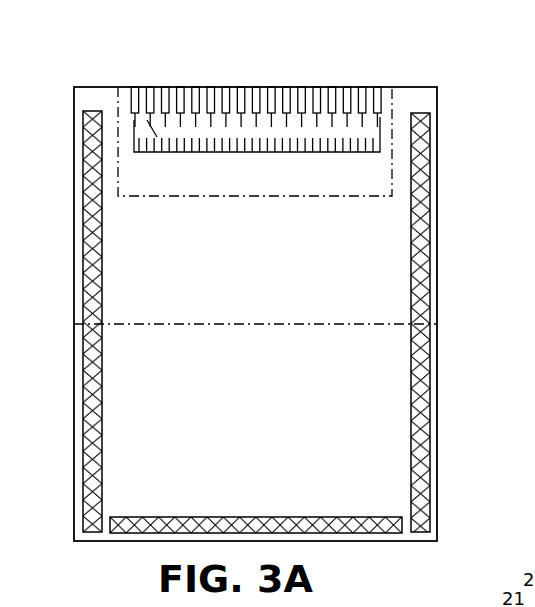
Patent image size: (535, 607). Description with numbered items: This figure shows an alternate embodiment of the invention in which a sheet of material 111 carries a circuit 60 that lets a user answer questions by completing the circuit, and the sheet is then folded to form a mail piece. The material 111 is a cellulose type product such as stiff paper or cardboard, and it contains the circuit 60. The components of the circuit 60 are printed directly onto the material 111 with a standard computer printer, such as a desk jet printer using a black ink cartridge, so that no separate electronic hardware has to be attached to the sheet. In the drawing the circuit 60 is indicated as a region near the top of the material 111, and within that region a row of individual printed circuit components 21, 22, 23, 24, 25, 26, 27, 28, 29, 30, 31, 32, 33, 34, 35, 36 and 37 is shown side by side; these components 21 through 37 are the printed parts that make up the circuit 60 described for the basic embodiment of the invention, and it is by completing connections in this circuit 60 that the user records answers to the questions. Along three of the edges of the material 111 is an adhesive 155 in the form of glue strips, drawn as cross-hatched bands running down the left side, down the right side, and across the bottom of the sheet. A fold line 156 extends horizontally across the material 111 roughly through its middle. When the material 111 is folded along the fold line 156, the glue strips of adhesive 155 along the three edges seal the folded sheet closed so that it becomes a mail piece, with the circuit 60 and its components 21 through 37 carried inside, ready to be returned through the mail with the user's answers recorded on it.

The connector contact pin 21 is at (133, 86).
The connector contact pin 22 is at (150, 86).
The connector contact pin 23 is at (165, 86).
The connector contact pin 24 is at (181, 86).
The connector contact pin 25 is at (196, 86).
The connector contact pin 26 is at (211, 86).
The connector contact pin 27 is at (226, 86).
The connector contact pin 28 is at (241, 86).
The connector contact pin 29 is at (256, 86).
The connector contact pin 30 is at (271, 86).
The connector contact pin 31 is at (286, 86).
The connector contact pin 32 is at (301, 86).
The connector contact pin 33 is at (316, 86).
The connector contact pin 34 is at (332, 86).
The connector contact pin 35 is at (347, 86).
The connector contact pin 36 is at (364, 86).
The connector contact pin 37 is at (379, 86).
The circuit 60 is at (225, 198).
The material 111 is at (420, 101).
The adhesive 155 is at (101, 402).
The fold line 156 is at (313, 323).